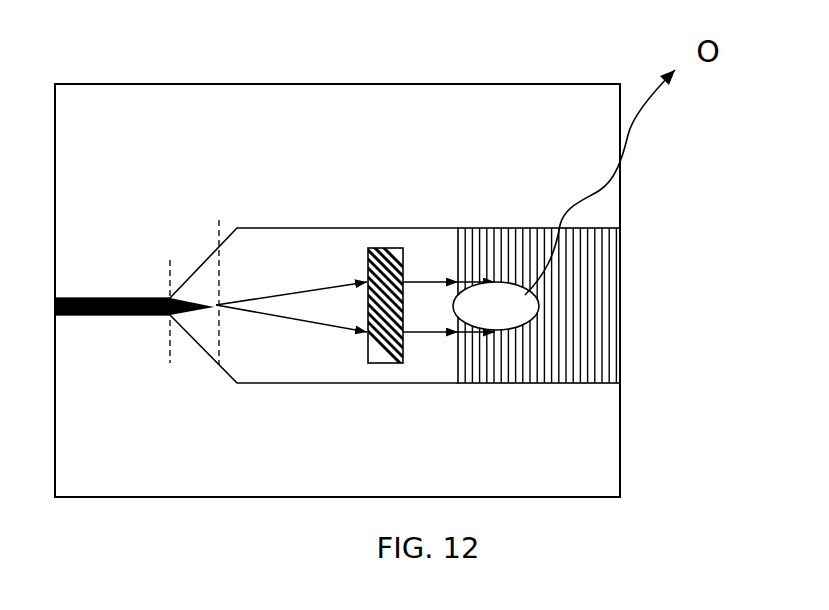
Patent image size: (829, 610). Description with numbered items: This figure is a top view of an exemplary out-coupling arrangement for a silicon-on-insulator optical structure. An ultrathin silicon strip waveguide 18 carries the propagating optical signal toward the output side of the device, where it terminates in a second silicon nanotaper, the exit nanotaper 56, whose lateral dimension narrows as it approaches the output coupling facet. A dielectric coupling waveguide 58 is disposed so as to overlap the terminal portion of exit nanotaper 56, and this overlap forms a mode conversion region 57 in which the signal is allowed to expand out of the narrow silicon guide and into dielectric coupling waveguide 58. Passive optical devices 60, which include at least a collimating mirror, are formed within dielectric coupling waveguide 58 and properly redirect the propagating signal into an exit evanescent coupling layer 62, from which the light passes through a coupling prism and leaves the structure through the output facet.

The ultrathin silicon strip waveguide 18 is at (99, 292).
The exit nanotaper 56 is at (213, 305).
The mode conversion region 57 is at (203, 332).
The dielectric coupling waveguide 58 is at (345, 353).
The passive optical devices 60 is at (380, 248).
The exit evanescent coupling layer 62 is at (492, 239).